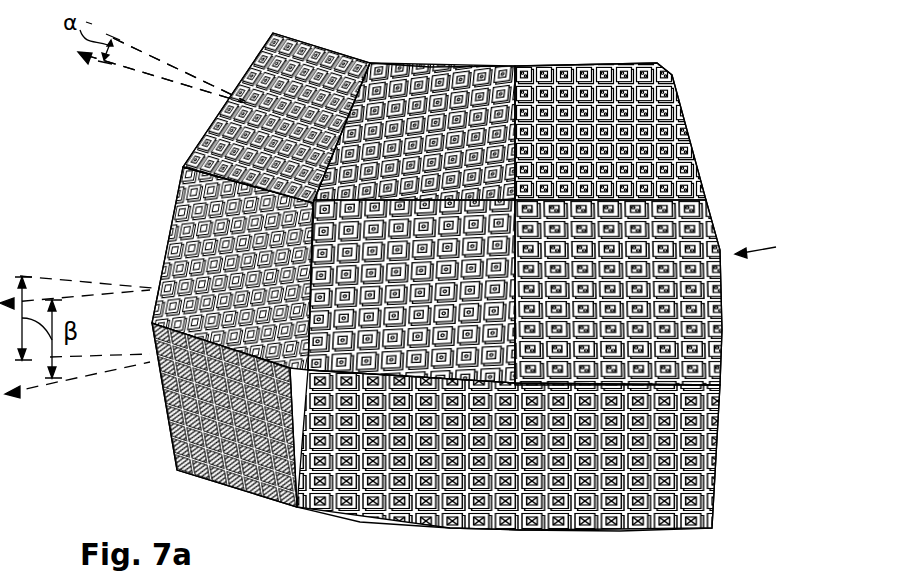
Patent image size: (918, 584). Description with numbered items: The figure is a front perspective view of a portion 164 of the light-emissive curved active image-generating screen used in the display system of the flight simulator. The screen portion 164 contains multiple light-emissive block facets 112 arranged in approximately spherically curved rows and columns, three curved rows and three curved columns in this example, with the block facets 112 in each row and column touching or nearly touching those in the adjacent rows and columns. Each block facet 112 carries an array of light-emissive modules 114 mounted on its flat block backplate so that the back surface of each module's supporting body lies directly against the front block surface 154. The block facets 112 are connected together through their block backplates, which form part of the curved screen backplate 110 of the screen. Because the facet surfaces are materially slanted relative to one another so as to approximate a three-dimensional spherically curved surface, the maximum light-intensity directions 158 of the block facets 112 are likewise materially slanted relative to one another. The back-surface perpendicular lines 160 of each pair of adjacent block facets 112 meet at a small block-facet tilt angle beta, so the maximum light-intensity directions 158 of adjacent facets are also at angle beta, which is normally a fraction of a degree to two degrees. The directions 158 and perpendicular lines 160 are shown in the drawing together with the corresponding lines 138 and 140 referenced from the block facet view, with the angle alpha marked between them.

The screen backplate 110 is at (464, 269).
The light-emissive block facet 112 is at (693, 442).
The light-emissive module 114 is at (686, 156).
The front block surface 154 is at (433, 63).
The maximum light-intensity direction 158 is at (128, 70).
The back-surface perpendicular line 160 is at (160, 36).
The row direction (referenced) 138 is at (165, 79).
The row direction (referenced) 140 is at (179, 69).
The screen portion 164 is at (775, 248).